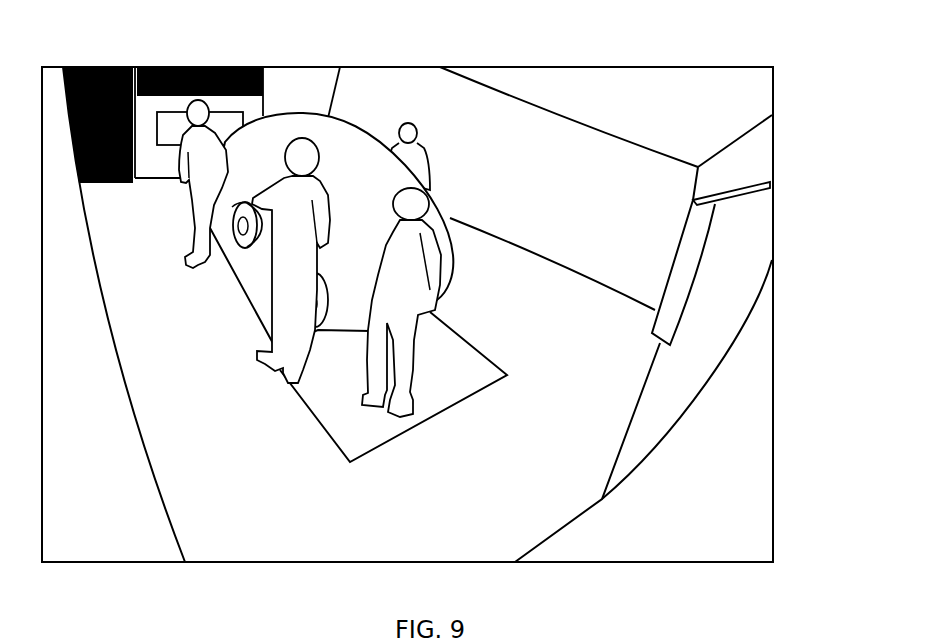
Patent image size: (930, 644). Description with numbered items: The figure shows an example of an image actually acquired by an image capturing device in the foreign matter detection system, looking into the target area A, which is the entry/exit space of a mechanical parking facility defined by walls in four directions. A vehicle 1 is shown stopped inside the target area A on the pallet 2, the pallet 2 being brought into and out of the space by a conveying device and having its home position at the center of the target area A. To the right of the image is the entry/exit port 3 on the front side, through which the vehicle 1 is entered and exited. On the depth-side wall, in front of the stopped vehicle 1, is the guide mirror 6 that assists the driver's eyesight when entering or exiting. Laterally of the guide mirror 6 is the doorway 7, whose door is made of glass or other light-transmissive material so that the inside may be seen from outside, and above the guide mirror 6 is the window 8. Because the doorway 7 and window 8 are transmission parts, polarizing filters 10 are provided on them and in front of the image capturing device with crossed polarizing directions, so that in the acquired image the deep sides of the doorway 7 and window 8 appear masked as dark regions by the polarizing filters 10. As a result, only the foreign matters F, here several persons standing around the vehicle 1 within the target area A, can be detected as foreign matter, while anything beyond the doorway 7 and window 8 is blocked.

The target area A is at (678, 117).
The vehicle 1 is at (449, 209).
The pallet 2 is at (481, 368).
The entry/exit port 3 is at (755, 240).
The guide mirror 6 is at (160, 128).
The doorway 7 is at (113, 80).
The window 8 is at (160, 80).
The polarizing filter 10 is at (75, 80).
The foreign matter F is at (324, 258).